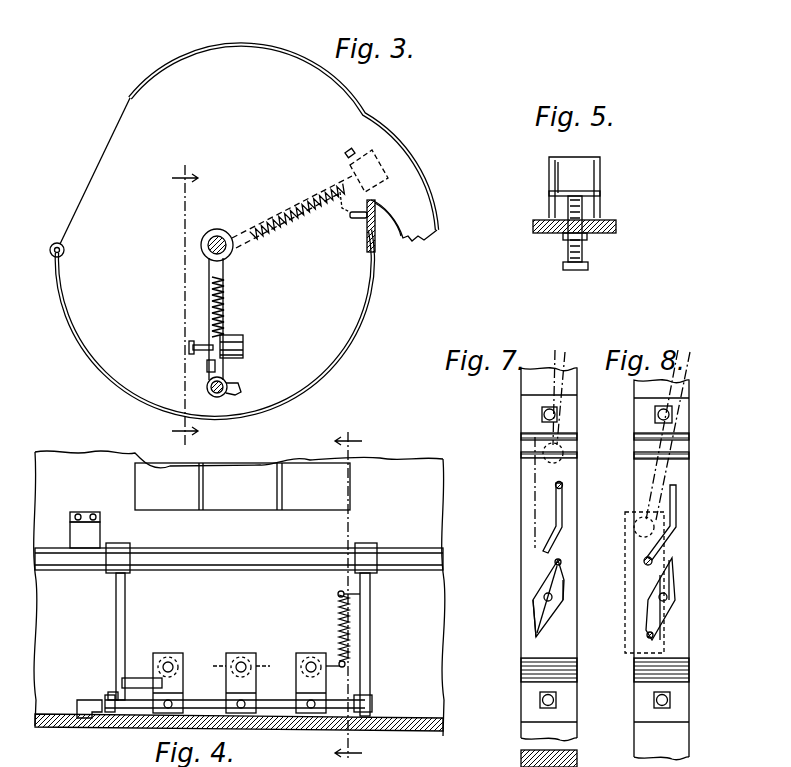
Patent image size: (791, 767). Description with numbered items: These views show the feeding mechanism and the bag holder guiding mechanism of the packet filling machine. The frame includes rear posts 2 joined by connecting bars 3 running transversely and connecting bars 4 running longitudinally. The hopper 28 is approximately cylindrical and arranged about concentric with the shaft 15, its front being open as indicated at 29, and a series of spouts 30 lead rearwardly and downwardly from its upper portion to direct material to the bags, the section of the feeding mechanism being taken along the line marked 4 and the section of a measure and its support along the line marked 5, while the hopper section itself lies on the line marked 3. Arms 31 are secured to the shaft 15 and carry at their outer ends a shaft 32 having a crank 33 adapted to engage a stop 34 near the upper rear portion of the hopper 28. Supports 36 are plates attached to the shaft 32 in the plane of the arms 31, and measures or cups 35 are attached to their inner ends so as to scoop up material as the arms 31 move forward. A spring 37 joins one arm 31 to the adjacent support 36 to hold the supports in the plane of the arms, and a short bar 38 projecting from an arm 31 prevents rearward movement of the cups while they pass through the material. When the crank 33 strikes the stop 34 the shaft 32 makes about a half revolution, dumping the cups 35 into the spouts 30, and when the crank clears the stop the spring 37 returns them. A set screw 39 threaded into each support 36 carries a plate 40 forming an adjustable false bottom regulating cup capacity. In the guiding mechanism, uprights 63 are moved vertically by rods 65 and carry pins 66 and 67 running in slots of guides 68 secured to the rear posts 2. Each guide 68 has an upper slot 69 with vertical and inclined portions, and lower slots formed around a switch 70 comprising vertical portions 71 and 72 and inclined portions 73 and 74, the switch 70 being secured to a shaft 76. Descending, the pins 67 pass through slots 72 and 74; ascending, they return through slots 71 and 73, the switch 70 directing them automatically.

In FIG. 7, the rear posts 2 is at (578, 385).
In FIG. 8, the rear posts 2 is at (690, 393).
In FIG. 3, the connecting bars 3 is at (348, 585).
In FIG. 4, the connecting bars 3 is at (352, 762).
In FIG. 3, the connecting bars 4 is at (185, 306).
In FIG. 4, the section line 5 is at (242, 666).
In FIG. 3, the shaft 15 is at (217, 238).
In FIG. 4, the shaft 15 is at (230, 557).
In FIG. 3, the hopper 28 is at (218, 44).
In FIG. 4, the hopper 28 is at (440, 621).
In FIG. 3, the open front portion 29 is at (92, 180).
In FIG. 3, the spouts 30 is at (420, 229).
In FIG. 4, the spouts 30 is at (242, 486).
In FIG. 3, the arms 31 is at (226, 270).
In FIG. 4, the arms 31 is at (116, 612).
In FIG. 3, the shaft 32 is at (219, 397).
In FIG. 4, the shaft 32 is at (276, 710).
In FIG. 3, the crank 33 is at (237, 388).
In FIG. 4, the crank 33 is at (86, 719).
In FIG. 3, the stop 34 is at (354, 219).
In FIG. 4, the stop 34 is at (85, 514).
In FIG. 3, the measures or cups 35 is at (243, 340).
In FIG. 5, the measures or cups 35 is at (600, 165).
In FIG. 3, the supports 36 is at (218, 366).
In FIG. 4, the supports 36 is at (183, 689).
In FIG. 5, the supports 36 is at (616, 229).
In FIG. 3, the spring 37 is at (226, 302).
In FIG. 4, the spring 37 is at (338, 619).
In FIG. 3, the short bar 38 is at (207, 365).
In FIG. 4, the short bar 38 is at (138, 677).
In FIG. 5, the set screw 39 is at (582, 252).
In FIG. 5, the plate 40 is at (590, 195).
In FIG. 7, the uprights 63 is at (530, 512).
In FIG. 7, the rods 65 is at (562, 401).
In FIG. 8, the rods 65 is at (680, 405).
In FIG. 7, the pin 66 is at (563, 485).
In FIG. 8, the pin 66 is at (644, 561).
In FIG. 7, the pin 67 is at (561, 561).
In FIG. 8, the pin 67 is at (648, 638).
In FIG. 7, the guides 68 is at (526, 657).
In FIG. 8, the guides 68 is at (690, 652).
In FIG. 7, the upper slot 69 is at (564, 502).
In FIG. 8, the upper slot 69 is at (678, 495).
In FIG. 7, the switch 70 is at (544, 621).
In FIG. 7, the vertical portion 71 is at (535, 615).
In FIG. 8, the vertical portion 71 is at (648, 616).
In FIG. 7, the vertical portion 72 is at (566, 580).
In FIG. 8, the vertical portion 72 is at (677, 568).
In FIG. 7, the inclined portion 73 is at (540, 582).
In FIG. 8, the inclined portion 73 is at (650, 590).
In FIG. 7, the inclined portion 74 is at (556, 603).
In FIG. 8, the inclined portion 74 is at (668, 606).
In FIG. 8, the shaft 76 is at (668, 598).